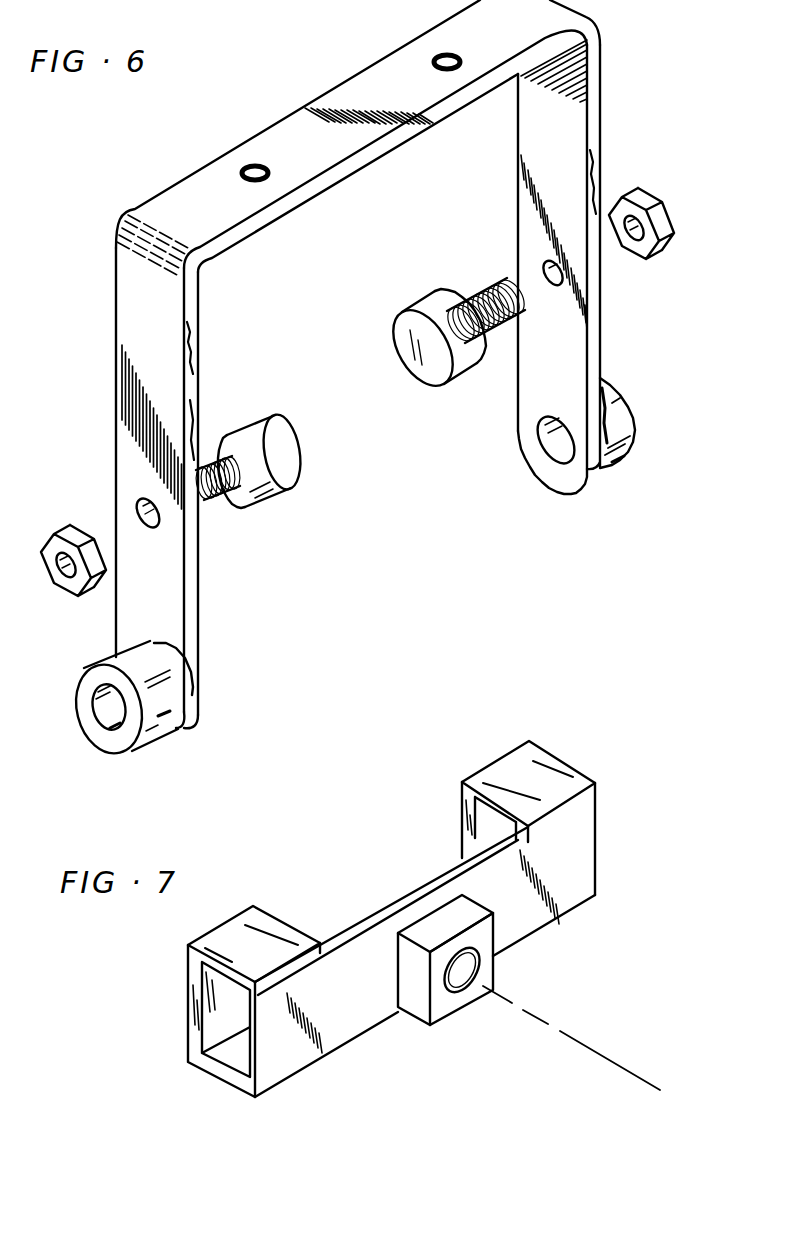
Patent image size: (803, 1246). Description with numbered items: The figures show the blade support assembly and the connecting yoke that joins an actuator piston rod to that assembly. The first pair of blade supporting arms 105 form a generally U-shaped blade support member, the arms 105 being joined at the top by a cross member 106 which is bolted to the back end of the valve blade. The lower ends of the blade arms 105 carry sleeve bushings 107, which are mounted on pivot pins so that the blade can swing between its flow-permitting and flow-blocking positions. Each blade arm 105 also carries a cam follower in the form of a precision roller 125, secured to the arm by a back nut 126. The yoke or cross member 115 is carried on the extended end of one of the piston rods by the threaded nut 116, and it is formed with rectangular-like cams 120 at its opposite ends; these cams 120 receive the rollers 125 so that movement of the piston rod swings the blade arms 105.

In FIG. 6, the cross member 106 is at (308, 130).
In FIG. 6, the blade supporting arms 105 is at (192, 383).
In FIG. 6, the sleeve bushings 107 is at (160, 730).
In FIG. 6, the precision roller 125 is at (442, 392).
In FIG. 6, the back nuts 126 is at (62, 592).
In FIG. 7, the rectangular-like cams 120 is at (220, 993).
In FIG. 7, the yoke or cross member 115 is at (520, 927).
In FIG. 7, the threaded nut 116 is at (452, 1003).